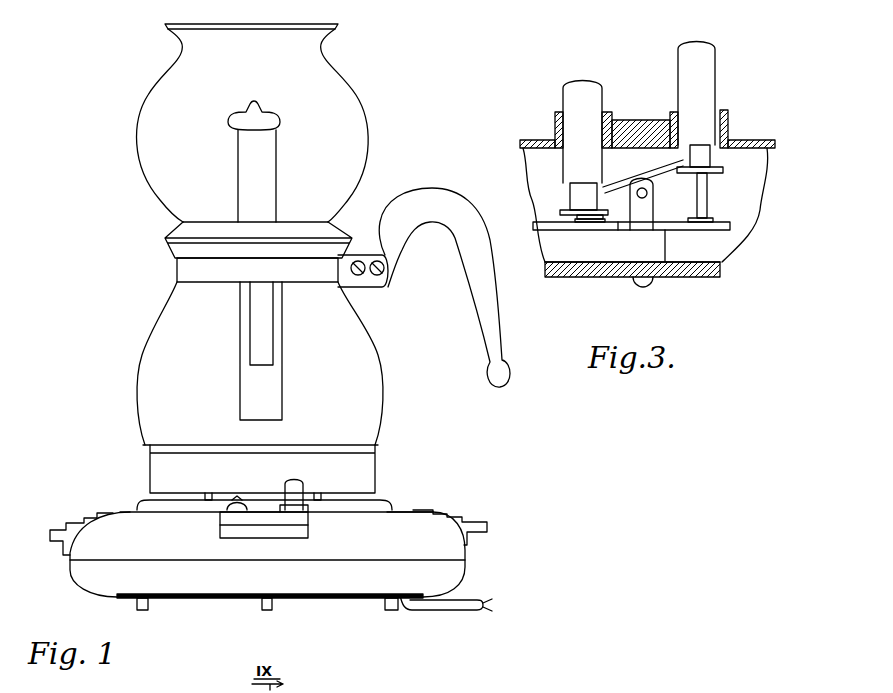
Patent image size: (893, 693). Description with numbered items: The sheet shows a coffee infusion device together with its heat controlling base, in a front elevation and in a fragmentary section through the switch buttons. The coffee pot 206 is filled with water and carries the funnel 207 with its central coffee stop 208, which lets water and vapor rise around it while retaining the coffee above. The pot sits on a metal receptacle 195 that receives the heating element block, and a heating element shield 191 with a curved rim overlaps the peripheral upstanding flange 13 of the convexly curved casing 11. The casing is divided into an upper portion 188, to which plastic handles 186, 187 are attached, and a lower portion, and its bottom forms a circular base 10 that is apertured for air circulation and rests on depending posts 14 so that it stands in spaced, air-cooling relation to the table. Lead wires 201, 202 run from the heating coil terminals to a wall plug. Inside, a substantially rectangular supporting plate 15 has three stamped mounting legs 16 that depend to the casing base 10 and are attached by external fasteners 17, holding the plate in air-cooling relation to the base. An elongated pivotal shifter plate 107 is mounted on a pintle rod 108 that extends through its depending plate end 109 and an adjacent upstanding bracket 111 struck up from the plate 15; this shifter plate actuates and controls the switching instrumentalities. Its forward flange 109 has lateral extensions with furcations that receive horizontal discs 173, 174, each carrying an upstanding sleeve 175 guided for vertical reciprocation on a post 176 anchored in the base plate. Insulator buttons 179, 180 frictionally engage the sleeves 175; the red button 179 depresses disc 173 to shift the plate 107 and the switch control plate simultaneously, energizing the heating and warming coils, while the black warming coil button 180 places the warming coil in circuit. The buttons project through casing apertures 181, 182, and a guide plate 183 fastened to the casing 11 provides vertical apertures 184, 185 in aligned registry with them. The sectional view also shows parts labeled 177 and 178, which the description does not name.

In FIG. 1, the circular base 10 is at (183, 600).
In FIG. 3, the circular base 10 is at (693, 280).
In FIG. 1, the convexly curved casing 11 is at (402, 510).
In FIG. 3, the convexly curved casing 11 is at (757, 133).
In FIG. 1, the peripheral upstanding flange 13 is at (173, 513).
In FIG. 1, the depending posts 14 is at (143, 610).
In FIG. 3, the supporting plate 15 is at (735, 245).
In FIG. 3, the mounting legs 16 is at (655, 243).
In FIG. 3, the external fasteners 17 is at (648, 285).
In FIG. 3, the pivotal plate 107 is at (648, 170).
In FIG. 3, the pintle rod 108 is at (665, 202).
In FIG. 3, the depending plate end 109 is at (690, 172).
In FIG. 3, the upstanding bracket 111 is at (640, 222).
In FIG. 3, the horizontal disc 173 is at (565, 225).
In FIG. 3, the horizontal disc 174 is at (735, 140).
In FIG. 3, the upstanding sleeve 175 is at (700, 152).
In FIG. 3, the post 176 is at (710, 205).
In FIG. 3, the contact 177 is at (598, 232).
In FIG. 3, the terminal 178 is at (713, 228).
In FIG. 1, the insulator button 179 is at (237, 503).
In FIG. 3, the insulator button 179 is at (580, 95).
In FIG. 1, the warming coil button 180 is at (300, 487).
In FIG. 3, the warming coil button 180 is at (700, 65).
In FIG. 3, the casing aperture 181 is at (553, 145).
In FIG. 3, the casing aperture 182 is at (668, 122).
In FIG. 1, the guide plate 183 is at (300, 527).
In FIG. 3, the guide plate 183 is at (553, 135).
In FIG. 3, the vertical aperture 184 is at (553, 125).
In FIG. 3, the vertical aperture 185 is at (724, 110).
In FIG. 1, the handle 186 is at (85, 527).
In FIG. 1, the handle 187 is at (452, 518).
In FIG. 1, the upper portion 188 is at (400, 523).
In FIG. 1, the heating element shield 191 is at (142, 505).
In FIG. 1, the metal receptacle 195 is at (148, 483).
In FIG. 1, the lead wire 201 is at (487, 600).
In FIG. 1, the lead wire 202 is at (492, 610).
In FIG. 1, the coffee pot 206 is at (352, 352).
In FIG. 1, the funnel 207 is at (355, 100).
In FIG. 1, the coffee stop 208 is at (267, 175).